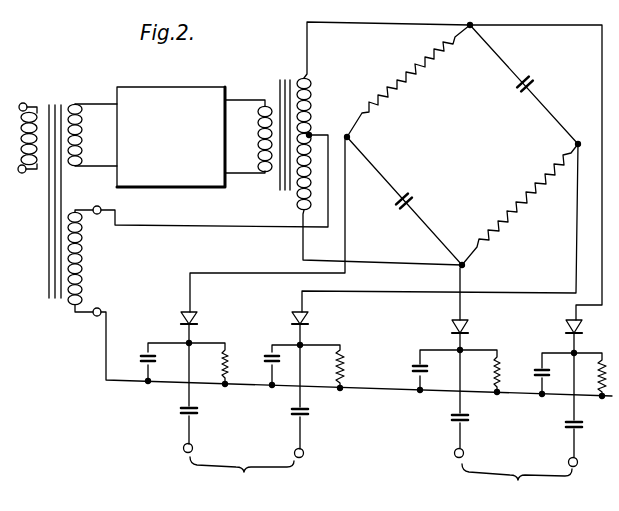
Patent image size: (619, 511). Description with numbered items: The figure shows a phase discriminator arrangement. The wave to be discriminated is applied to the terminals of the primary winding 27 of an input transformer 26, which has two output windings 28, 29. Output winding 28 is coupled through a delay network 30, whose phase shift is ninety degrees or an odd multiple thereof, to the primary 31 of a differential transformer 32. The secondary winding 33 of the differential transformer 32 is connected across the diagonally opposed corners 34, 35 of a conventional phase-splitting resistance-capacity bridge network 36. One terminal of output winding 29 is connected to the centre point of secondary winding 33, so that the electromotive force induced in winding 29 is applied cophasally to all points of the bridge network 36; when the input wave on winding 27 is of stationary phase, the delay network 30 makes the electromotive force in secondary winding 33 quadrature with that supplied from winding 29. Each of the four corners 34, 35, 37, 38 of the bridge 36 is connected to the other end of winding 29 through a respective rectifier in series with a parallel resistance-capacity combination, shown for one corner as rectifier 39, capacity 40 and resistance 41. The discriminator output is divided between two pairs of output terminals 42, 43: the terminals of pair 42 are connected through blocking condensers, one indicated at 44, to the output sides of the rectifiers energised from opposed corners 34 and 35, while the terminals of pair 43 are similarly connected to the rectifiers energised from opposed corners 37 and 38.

The input transformer 26 is at (67, 84).
The primary winding 27 is at (36, 103).
The output winding 28 is at (100, 103).
The output winding 29 is at (70, 303).
The delay network 30 is at (168, 87).
The primary 31 is at (240, 100).
The differential transformer 32 is at (277, 68).
The secondary winding 33 is at (312, 128).
The corner 34 is at (455, 28).
The corner 35 is at (463, 262).
The phase-splitting resistance-capacity bridge network 36 is at (381, 66).
The corner 37 is at (349, 137).
The corner 38 is at (576, 145).
The rectifier 39 is at (469, 326).
The capacity 40 is at (410, 371).
The resistance 41 is at (502, 371).
The pair of output terminals 42 is at (517, 484).
The pair of output terminals 43 is at (242, 477).
The blocking condenser 44 is at (440, 420).